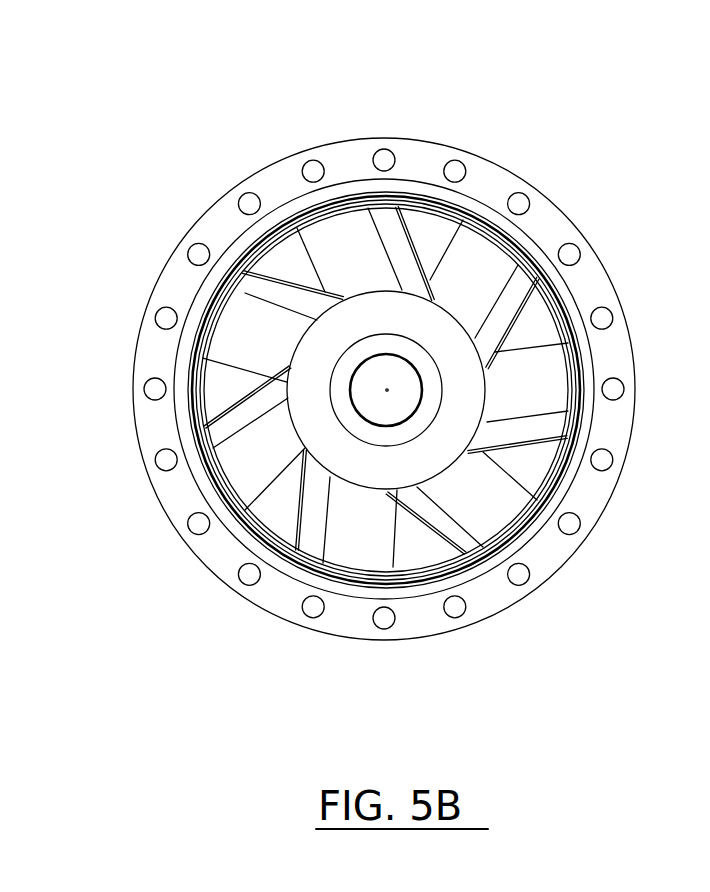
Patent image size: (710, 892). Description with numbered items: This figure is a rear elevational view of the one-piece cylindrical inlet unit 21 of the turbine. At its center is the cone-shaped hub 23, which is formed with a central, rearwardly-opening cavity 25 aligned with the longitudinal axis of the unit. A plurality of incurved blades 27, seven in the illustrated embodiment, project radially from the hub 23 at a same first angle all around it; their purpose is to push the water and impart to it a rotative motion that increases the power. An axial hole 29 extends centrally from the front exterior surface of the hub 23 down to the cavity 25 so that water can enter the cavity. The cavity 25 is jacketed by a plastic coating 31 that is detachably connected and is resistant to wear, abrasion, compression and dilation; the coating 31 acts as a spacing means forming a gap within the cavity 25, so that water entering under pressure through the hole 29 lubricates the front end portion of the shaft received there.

The inlet unit 21 is at (518, 163).
The hub 23 is at (317, 353).
The cavity 25 is at (374, 400).
The incurved blades 27 is at (281, 297).
The axial hole 29 is at (387, 390).
The plastic coating 31 is at (382, 437).